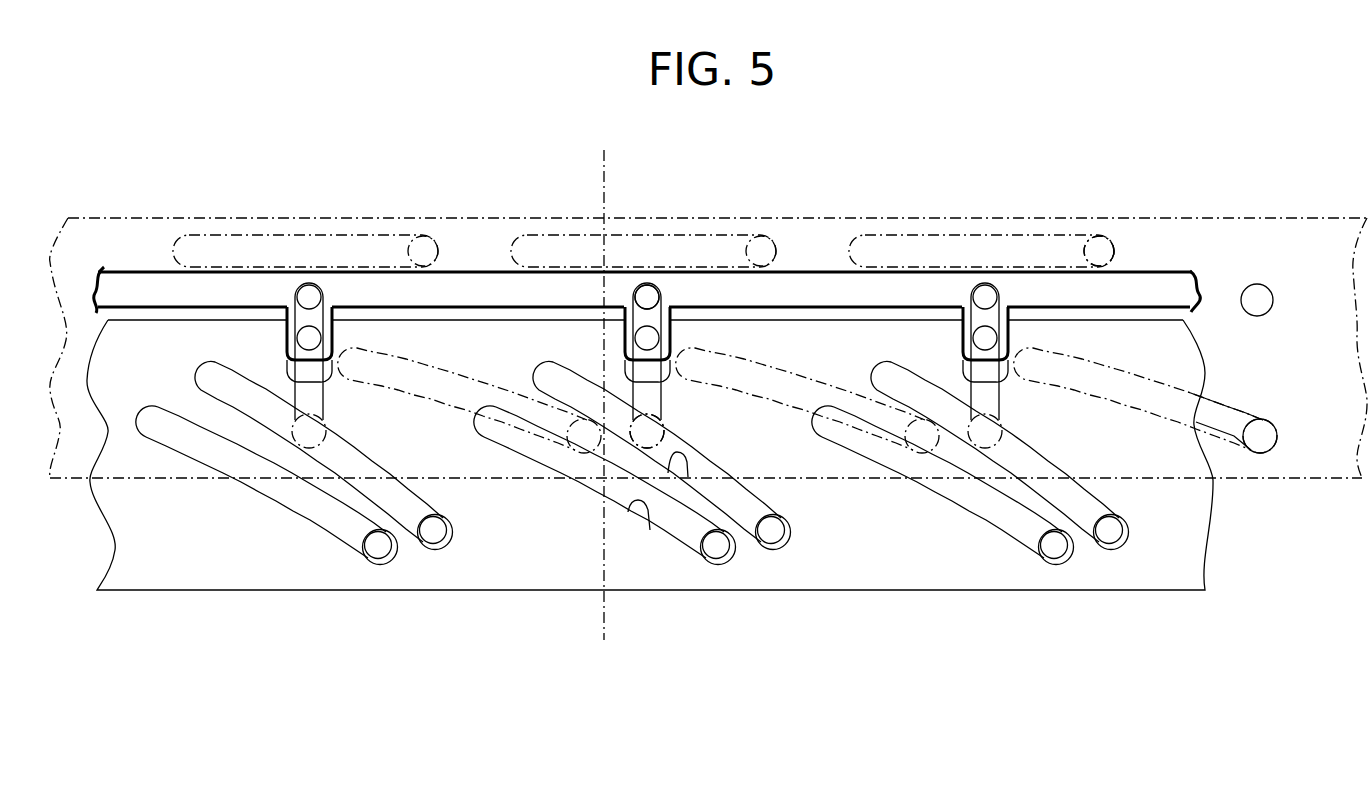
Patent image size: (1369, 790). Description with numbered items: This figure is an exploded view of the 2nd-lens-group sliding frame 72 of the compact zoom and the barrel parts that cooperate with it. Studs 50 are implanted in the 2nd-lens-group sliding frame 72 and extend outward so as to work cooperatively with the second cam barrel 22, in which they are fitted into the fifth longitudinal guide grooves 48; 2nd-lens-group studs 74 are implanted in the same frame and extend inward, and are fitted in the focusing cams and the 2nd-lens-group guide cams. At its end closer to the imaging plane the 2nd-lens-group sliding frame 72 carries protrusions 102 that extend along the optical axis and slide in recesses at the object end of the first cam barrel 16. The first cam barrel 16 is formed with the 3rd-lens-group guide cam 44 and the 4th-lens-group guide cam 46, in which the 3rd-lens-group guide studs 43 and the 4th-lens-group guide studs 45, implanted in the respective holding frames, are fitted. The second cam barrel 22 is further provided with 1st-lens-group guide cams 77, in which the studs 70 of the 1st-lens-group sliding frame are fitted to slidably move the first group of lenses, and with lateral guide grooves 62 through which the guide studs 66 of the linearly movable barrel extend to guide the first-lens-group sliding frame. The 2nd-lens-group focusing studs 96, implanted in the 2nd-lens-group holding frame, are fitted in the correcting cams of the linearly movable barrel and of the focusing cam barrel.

The first cam barrel 16 is at (133, 552).
The second cam barrel 22 is at (108, 248).
The 2nd-lens-group sliding frame 72 is at (485, 285).
The protrusions 102 is at (667, 284).
The fifth longitudinal guide grooves 48 is at (670, 333).
The studs 50 is at (648, 296).
The 2nd-lens-group studs 74 is at (643, 350).
The lateral guide grooves 62 is at (975, 235).
The guide studs 66 is at (1104, 245).
The 1st-lens-group guide cams 77 is at (1170, 380).
The studs 70 is at (1258, 442).
The 2nd-lens-group focusing studs 96 is at (1258, 284).
The 3rd-lens-group guide studs 43 is at (723, 549).
The 4th-lens-group guide studs 45 is at (776, 540).
The 3rd-lens-group guide cam 44 is at (650, 530).
The 4th-lens-group guide cam 46 is at (688, 477).